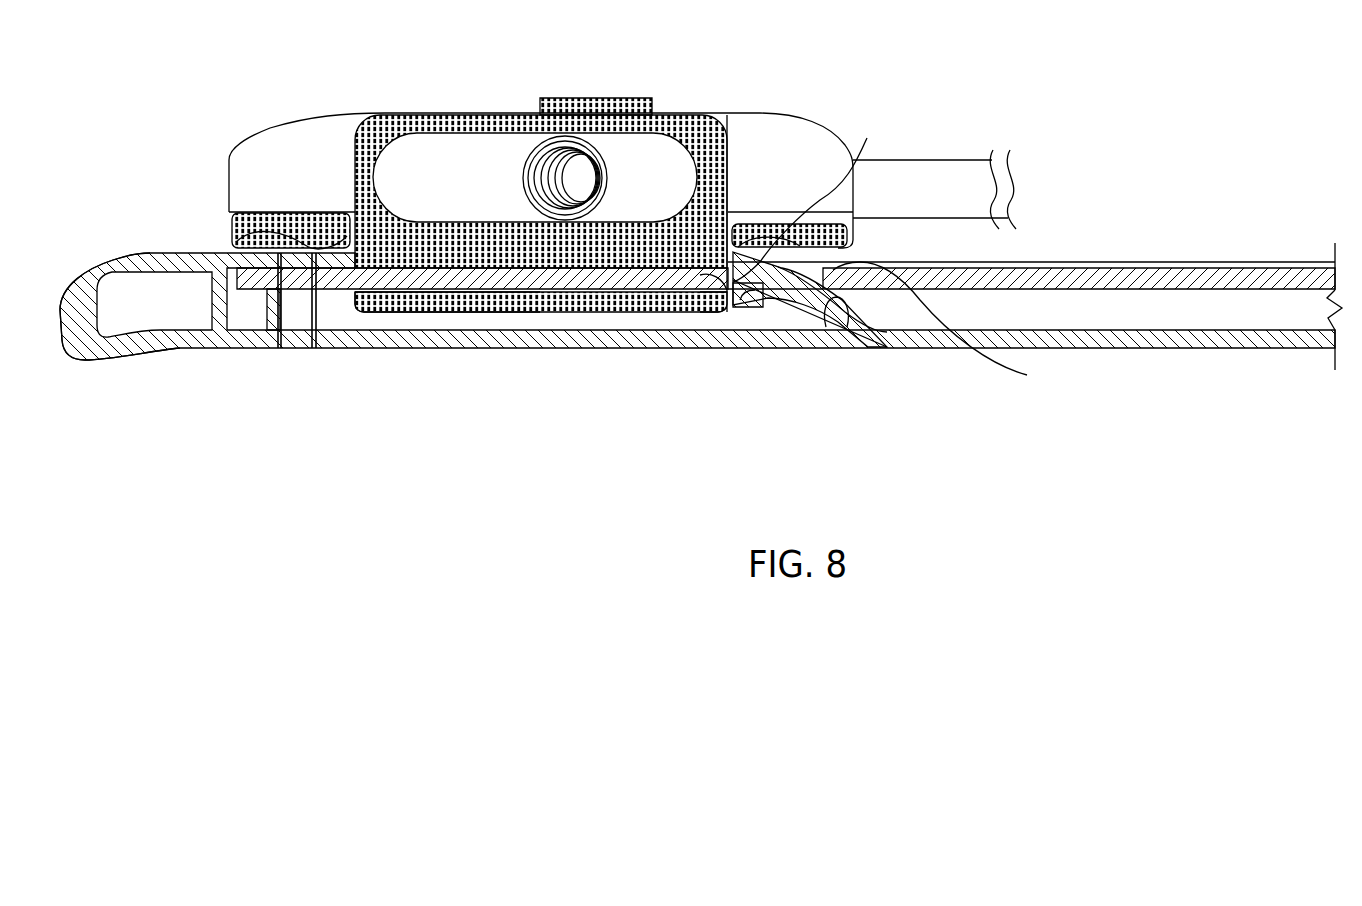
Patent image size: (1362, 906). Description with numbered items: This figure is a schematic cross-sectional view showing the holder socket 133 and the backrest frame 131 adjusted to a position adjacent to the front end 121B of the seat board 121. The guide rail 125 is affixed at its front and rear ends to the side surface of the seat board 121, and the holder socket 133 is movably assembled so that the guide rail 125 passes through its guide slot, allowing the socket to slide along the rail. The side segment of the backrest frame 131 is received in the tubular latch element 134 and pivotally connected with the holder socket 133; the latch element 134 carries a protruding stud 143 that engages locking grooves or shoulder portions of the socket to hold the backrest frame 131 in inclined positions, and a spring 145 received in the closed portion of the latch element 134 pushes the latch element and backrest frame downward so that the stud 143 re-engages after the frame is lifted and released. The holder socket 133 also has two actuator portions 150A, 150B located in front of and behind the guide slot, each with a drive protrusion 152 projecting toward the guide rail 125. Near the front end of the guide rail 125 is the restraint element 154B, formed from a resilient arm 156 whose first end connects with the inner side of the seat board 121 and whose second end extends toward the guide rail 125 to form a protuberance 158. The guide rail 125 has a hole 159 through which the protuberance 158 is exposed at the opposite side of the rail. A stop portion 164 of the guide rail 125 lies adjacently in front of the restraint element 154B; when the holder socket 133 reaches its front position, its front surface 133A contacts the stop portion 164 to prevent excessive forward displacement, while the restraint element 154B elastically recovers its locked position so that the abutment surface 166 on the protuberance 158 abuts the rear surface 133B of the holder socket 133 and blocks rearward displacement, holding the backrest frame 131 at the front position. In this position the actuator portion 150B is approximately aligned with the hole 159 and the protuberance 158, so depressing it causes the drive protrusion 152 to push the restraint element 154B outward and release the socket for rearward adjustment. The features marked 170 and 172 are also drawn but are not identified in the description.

The seat board 121 is at (508, 337).
The front end of the seat board 121B is at (110, 253).
The guide rail 125 is at (1170, 280).
The backrest frame 131 is at (953, 168).
The holder socket 133 is at (428, 115).
The front surface of the holder socket 133A is at (357, 304).
The rear surface of the holder socket 133B is at (720, 312).
The latch element 134 is at (530, 160).
The protruding stud 143 is at (612, 105).
The spring 145 is at (553, 145).
The actuator portion 150A is at (270, 212).
The actuator portion 150B is at (726, 197).
The drive protrusion 152 is at (240, 230).
The restraint element 154B is at (878, 346).
The resilient arm 156 is at (850, 333).
The protuberance 158 is at (785, 320).
The hole 159 is at (952, 326).
The stop portion 164 is at (333, 262).
The abutment surface 166 is at (750, 305).
The stop 170 is at (722, 270).
The latch base 172 is at (837, 317).